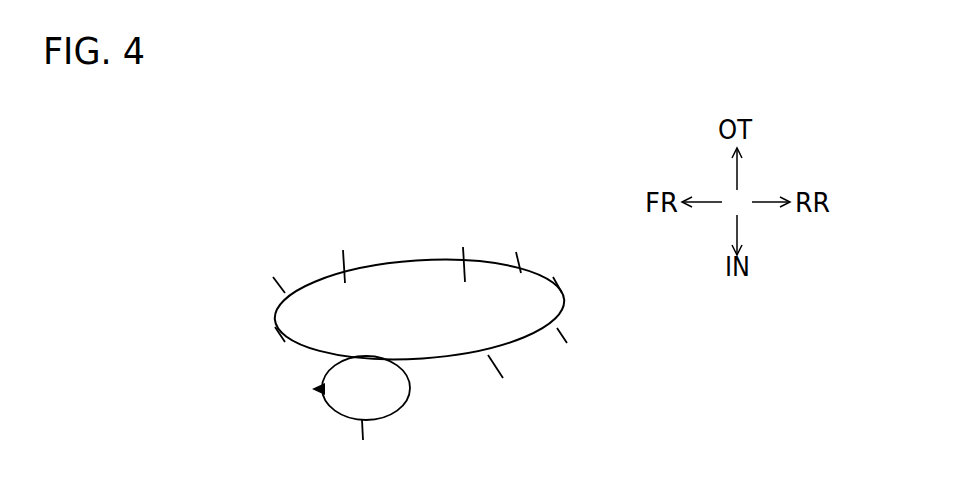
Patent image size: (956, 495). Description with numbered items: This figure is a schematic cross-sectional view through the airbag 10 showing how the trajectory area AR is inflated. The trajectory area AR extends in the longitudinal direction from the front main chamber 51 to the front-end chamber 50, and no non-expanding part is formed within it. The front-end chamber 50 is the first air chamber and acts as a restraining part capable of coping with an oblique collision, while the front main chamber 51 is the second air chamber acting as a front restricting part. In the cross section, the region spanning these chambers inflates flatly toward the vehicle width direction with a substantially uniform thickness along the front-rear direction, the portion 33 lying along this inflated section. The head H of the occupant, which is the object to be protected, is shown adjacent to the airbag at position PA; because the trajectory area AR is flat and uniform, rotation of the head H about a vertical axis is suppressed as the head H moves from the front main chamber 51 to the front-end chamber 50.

The vehicle wheel / tire 10 is at (405, 217).
The front-end chamber 50 is at (345, 252).
The front main chamber 51 is at (464, 251).
The tread portion 33 is at (518, 250).
The trajectory area AR is at (515, 376).
The pattern area PA is at (425, 399).
The head H is at (364, 445).